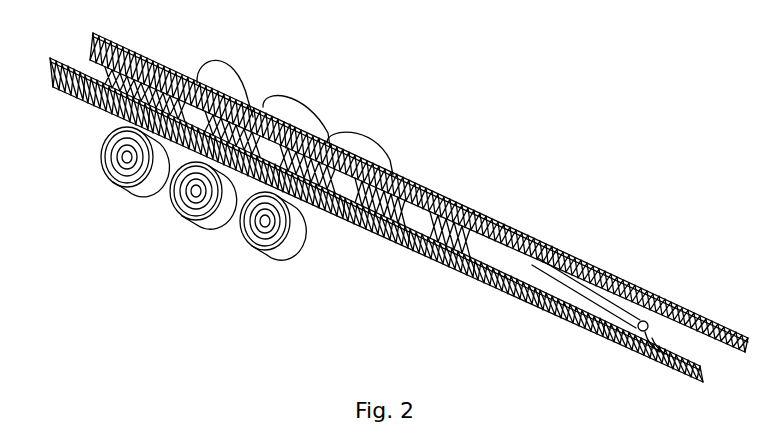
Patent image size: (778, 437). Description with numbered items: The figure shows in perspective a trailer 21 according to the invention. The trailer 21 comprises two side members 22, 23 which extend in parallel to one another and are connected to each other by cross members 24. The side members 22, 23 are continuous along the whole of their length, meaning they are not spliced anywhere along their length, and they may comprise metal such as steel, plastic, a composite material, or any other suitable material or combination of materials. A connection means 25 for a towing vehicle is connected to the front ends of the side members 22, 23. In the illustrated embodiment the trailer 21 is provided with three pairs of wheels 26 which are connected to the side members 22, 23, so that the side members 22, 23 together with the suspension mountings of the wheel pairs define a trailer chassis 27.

The trailer 21 is at (397, 205).
The side member 22 is at (433, 195).
The side member 23 is at (363, 230).
The cross members 24 is at (201, 75).
The connection means 25 is at (645, 320).
The wheels 26 is at (242, 235).
The trailer chassis 27 is at (407, 162).